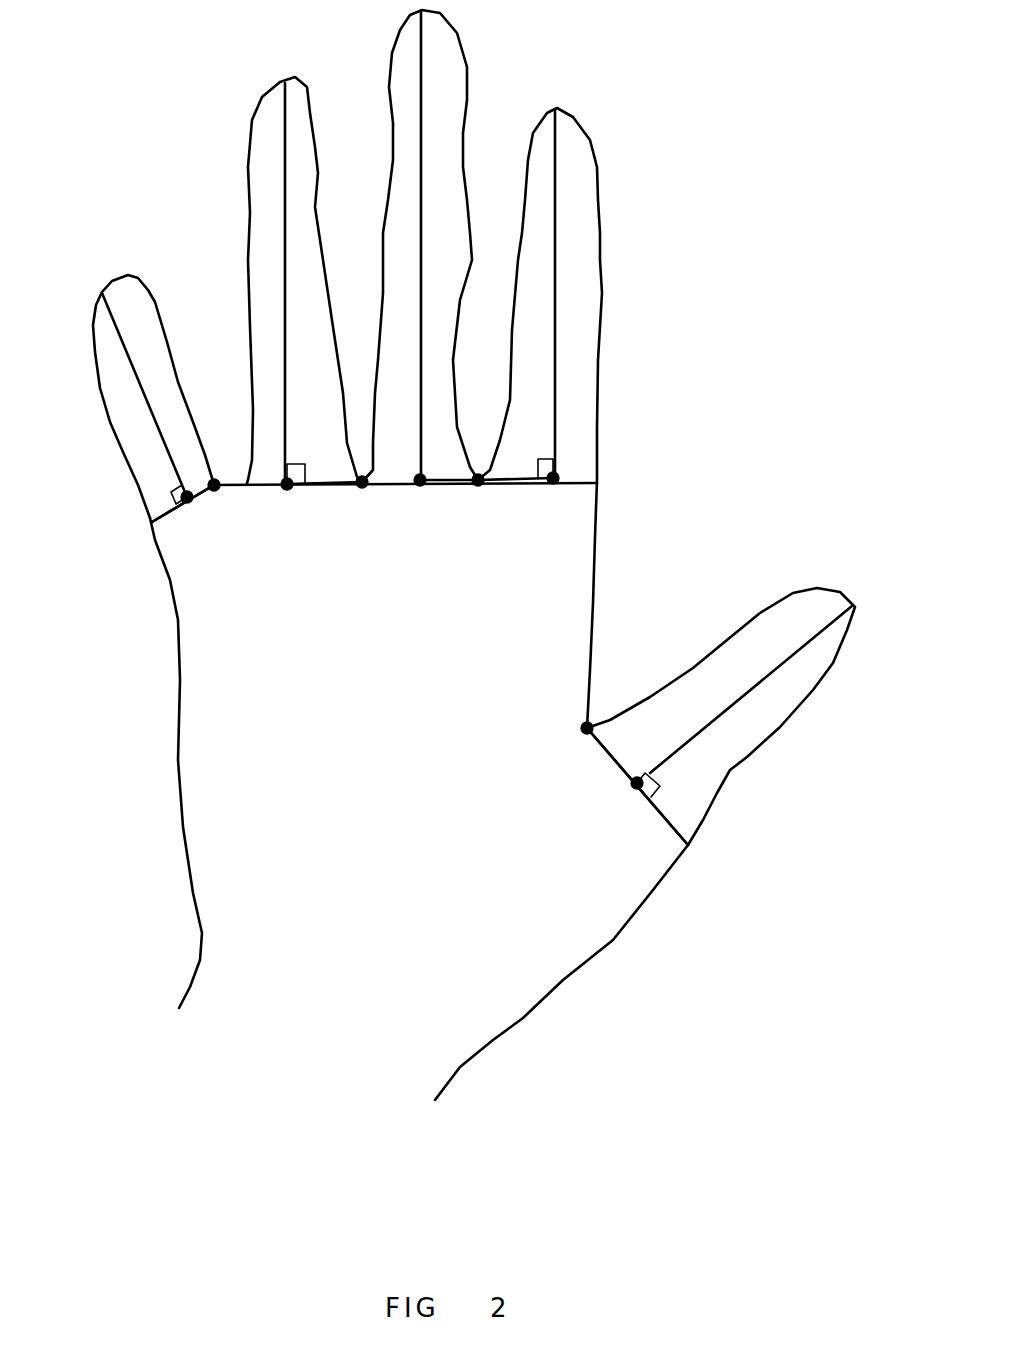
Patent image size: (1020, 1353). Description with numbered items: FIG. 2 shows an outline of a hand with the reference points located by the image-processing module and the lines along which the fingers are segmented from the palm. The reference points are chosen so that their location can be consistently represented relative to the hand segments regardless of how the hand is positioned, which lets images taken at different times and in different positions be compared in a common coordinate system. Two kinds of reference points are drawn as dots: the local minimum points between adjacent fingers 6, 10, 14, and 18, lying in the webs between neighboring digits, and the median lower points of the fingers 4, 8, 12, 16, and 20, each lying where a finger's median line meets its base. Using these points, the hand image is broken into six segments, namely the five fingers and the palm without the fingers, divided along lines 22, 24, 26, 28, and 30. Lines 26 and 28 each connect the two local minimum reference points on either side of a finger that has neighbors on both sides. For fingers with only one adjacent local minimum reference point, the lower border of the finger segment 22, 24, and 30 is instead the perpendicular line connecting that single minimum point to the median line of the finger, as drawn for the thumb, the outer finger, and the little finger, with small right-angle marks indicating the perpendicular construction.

The median lower point of the thumb 4 is at (632, 790).
The local minimum point between thumb and index finger 6 is at (580, 734).
The median lower point of the ring finger 8 is at (555, 486).
The local minimum point between ring and middle fingers 10 is at (480, 486).
The median lower point of the middle finger 12 is at (420, 486).
The local minimum point between middle and index fingers 14 is at (363, 488).
The median lower point of the index finger 16 is at (288, 490).
The local minimum point between index finger and little finger 18 is at (216, 491).
The median lower point of the little finger 20 is at (187, 503).
The lower border of the thumb segment 22 is at (608, 758).
The lower border of the ring finger segment 24 is at (508, 486).
The line connecting local minimum points on either side of the middle finger 26 is at (440, 486).
The line connecting local minimum points on either side of the index finger 28 is at (320, 487).
The lower border of the little finger segment 30 is at (152, 522).